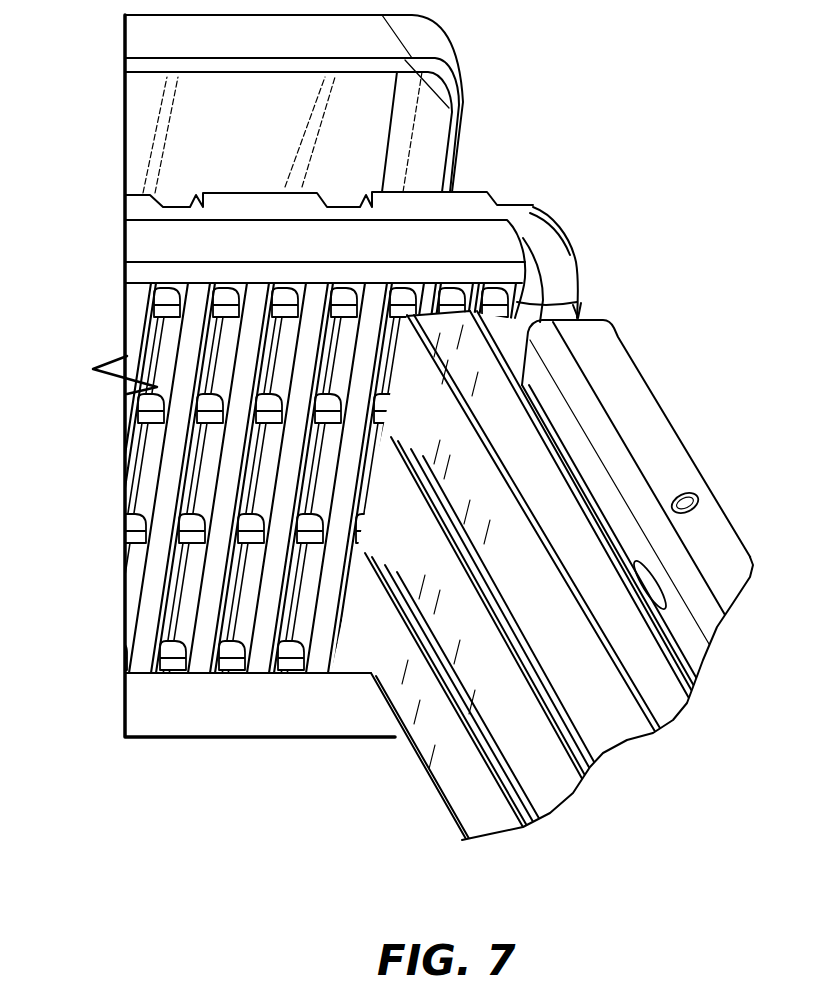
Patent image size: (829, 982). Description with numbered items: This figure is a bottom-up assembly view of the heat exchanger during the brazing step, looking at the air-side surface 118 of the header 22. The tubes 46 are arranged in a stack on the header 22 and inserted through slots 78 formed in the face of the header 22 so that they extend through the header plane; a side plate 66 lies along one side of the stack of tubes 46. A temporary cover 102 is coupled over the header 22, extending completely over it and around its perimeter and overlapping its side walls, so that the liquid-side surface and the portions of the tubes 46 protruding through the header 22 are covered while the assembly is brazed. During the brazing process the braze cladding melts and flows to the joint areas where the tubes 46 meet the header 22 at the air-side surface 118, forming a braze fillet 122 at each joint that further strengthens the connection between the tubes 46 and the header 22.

The header 22 is at (550, 267).
The tubes 46 is at (560, 733).
The side plate 66 is at (587, 450).
The slots 78 is at (373, 582).
The temporary cover 102 is at (438, 127).
The air-side surface 118 is at (266, 541).
The braze fillet 122 is at (252, 495).